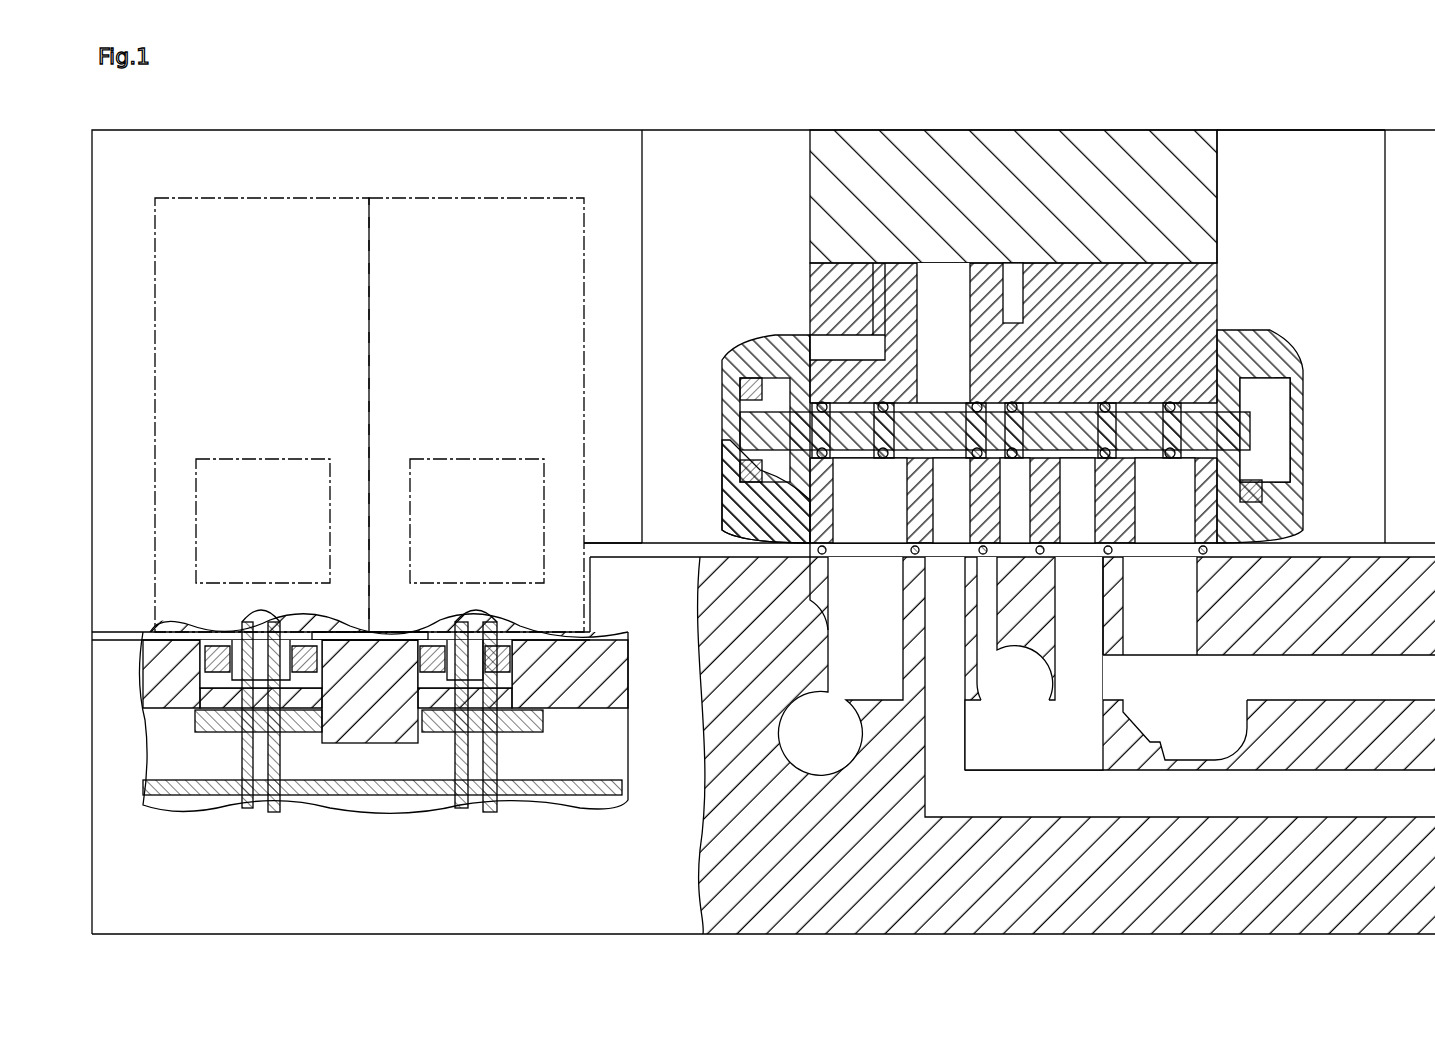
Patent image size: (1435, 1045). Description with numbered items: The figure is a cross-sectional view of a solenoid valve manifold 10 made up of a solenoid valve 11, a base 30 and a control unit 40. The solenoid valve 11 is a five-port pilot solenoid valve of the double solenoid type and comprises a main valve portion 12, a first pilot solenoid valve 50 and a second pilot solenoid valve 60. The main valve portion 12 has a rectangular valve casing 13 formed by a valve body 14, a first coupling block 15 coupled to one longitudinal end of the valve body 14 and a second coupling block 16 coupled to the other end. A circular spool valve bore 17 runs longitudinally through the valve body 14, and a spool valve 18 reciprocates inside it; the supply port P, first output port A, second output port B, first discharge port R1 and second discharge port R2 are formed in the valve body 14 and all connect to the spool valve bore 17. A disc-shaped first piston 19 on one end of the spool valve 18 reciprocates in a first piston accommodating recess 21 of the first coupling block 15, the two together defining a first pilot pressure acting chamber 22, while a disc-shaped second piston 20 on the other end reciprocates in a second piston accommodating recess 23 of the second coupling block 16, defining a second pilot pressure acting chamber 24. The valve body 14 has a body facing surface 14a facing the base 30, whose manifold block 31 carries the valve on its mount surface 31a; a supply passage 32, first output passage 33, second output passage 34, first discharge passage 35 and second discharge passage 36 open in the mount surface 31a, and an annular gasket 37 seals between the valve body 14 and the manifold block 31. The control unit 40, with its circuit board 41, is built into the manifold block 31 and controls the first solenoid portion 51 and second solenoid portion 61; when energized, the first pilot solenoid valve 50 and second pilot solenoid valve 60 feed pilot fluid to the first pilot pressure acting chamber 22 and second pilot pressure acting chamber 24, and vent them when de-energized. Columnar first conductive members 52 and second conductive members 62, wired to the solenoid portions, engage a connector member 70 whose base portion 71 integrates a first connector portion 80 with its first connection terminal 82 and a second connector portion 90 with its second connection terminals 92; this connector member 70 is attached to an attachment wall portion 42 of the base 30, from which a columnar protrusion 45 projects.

The solenoid valve manifold 10 is at (1403, 94).
The solenoid valve 11 is at (1299, 130).
The main valve portion 12 is at (1352, 130).
The valve casing 13 is at (950, 130).
The valve body 14 is at (985, 263).
The body facing surface 14a is at (812, 580).
The first coupling block 15 is at (752, 130).
The second coupling block 16 is at (1268, 138).
The spool valve bore 17 is at (1068, 395).
The spool valve 18 is at (950, 403).
The first piston 19 is at (735, 385).
The second piston 20 is at (1255, 340).
The first piston accommodating recess 21 is at (740, 492).
The first pilot pressure acting chamber 22 is at (745, 480).
The second piston accommodating recess 23 is at (1265, 483).
The second pilot pressure acting chamber 24 is at (1283, 423).
The base 30 is at (125, 624).
The manifold block 31 is at (1385, 543).
The mount surface 31a is at (622, 543).
The supply passage 32 is at (1015, 690).
The first output passage 33 is at (945, 745).
The second output passage 34 is at (1075, 690).
The first discharge passage 35 is at (858, 700).
The second discharge passage 36 is at (1162, 640).
The gasket 37 is at (1212, 556).
The control unit 40 is at (616, 770).
The circuit board 41 is at (572, 780).
The attachment wall portion 42 is at (150, 686).
The protrusion 45 is at (352, 743).
The first pilot solenoid valve 50 is at (262, 198).
The first solenoid portion 51 is at (262, 459).
The first conductive members 52 is at (262, 560).
The second pilot solenoid valve 60 is at (475, 198).
The second solenoid portion 61 is at (475, 459).
The second conductive members 62 is at (475, 560).
The connector member 70 is at (207, 742).
The base portion 71 is at (435, 732).
The first connector portion 80 is at (236, 627).
The first connection terminal 82 is at (262, 838).
The second connector portion 90 is at (502, 627).
The second connection terminals 92 is at (477, 838).
The first discharge port R1 is at (878, 545).
The first output port A is at (957, 548).
The supply port P is at (1017, 548).
The second output port B is at (1077, 548).
The second discharge port R2 is at (1160, 545).